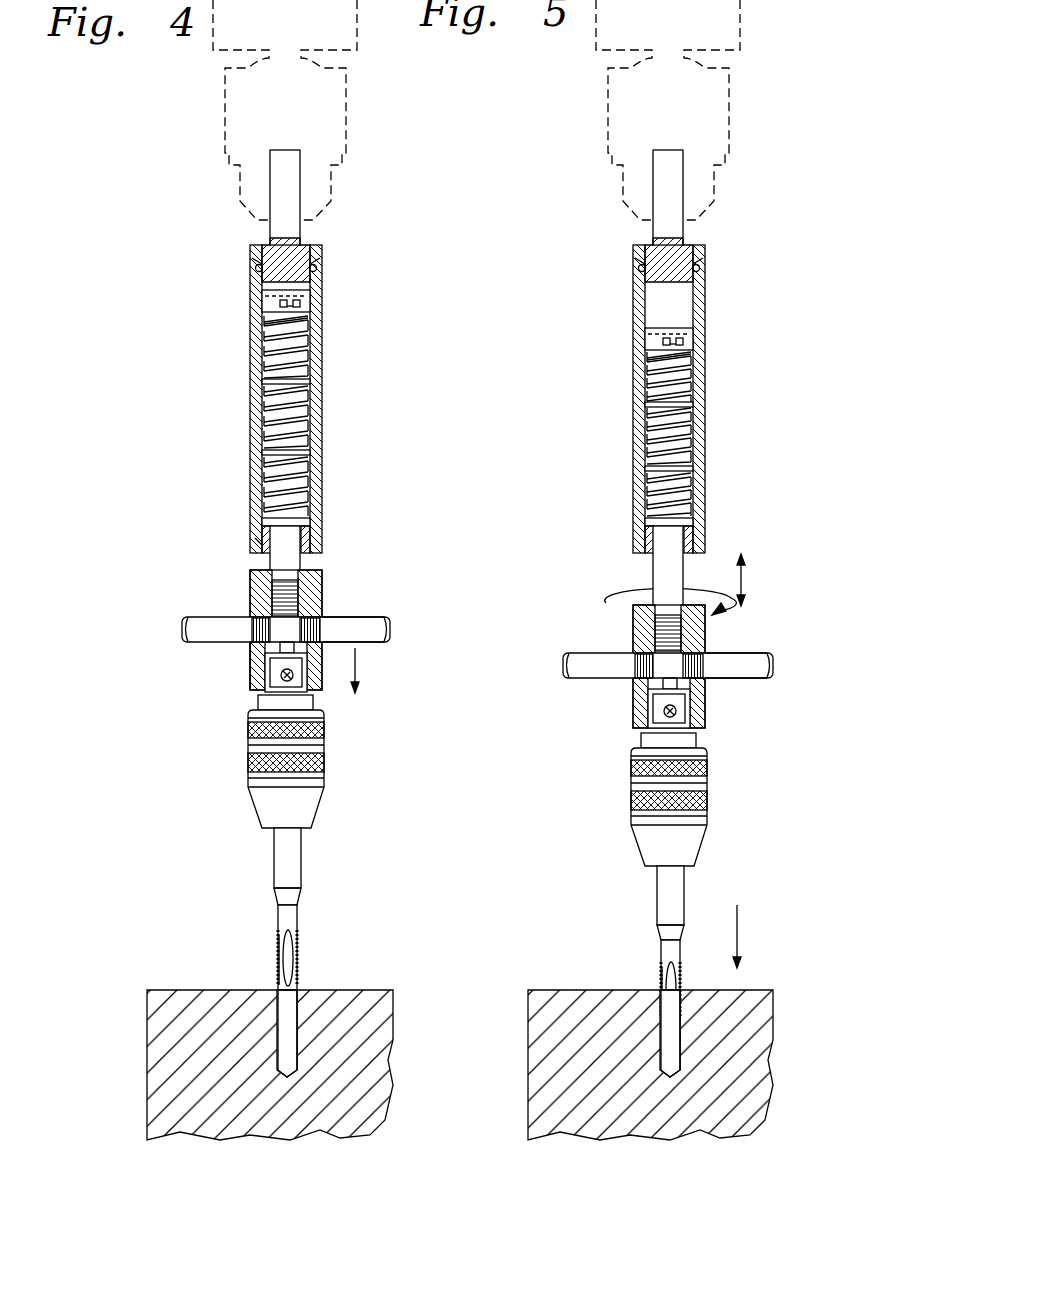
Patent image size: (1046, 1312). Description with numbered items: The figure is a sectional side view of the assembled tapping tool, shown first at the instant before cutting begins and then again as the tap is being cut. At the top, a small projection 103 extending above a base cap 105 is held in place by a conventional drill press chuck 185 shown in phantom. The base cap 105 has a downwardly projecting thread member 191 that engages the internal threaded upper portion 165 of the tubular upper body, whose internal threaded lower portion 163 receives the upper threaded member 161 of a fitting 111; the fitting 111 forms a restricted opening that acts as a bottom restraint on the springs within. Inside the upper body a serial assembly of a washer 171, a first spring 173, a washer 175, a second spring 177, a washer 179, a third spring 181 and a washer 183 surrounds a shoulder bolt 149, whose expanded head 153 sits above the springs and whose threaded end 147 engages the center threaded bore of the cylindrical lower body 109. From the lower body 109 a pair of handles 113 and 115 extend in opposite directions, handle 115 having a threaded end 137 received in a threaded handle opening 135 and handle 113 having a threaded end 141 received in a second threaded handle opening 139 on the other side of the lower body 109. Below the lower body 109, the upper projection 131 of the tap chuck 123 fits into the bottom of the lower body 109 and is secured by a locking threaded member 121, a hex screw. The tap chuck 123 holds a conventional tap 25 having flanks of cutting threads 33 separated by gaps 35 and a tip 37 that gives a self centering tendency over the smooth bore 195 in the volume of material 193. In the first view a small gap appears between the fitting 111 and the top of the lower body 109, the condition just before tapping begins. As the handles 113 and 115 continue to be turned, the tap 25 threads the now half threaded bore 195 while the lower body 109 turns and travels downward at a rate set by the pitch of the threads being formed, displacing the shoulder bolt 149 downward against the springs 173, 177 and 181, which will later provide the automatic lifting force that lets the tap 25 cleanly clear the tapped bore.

In FIG. 4, the tap 25 is at (303, 876).
In FIG. 5, the tap 25 is at (695, 915).
In FIG. 4, the cutting threads 33 is at (278, 975).
In FIG. 5, the cutting threads 33 is at (660, 983).
In FIG. 4, the gaps 35 is at (290, 945).
In FIG. 5, the gaps 35 is at (673, 965).
In FIG. 4, the tip 37 is at (300, 1012).
In FIG. 5, the tip 37 is at (690, 1012).
In FIG. 4, the small projection 103 is at (300, 190).
In FIG. 5, the small projection 103 is at (683, 190).
In FIG. 4, the base cap 105 is at (312, 248).
In FIG. 5, the base cap 105 is at (695, 248).
In FIG. 4, the lower body 109 is at (322, 582).
In FIG. 5, the lower body 109 is at (705, 690).
In FIG. 4, the fitting 111 is at (322, 548).
In FIG. 4, the handle 113 is at (212, 640).
In FIG. 5, the handle 113 is at (598, 678).
In FIG. 4, the handle 115 is at (340, 628).
In FIG. 5, the handle 115 is at (720, 663).
In FIG. 4, the locking threaded member 121 is at (280, 676).
In FIG. 5, the locking threaded member 121 is at (664, 712).
In FIG. 4, the tap chuck 123 is at (341, 700).
In FIG. 5, the tap chuck 123 is at (724, 740).
In FIG. 4, the upper projection 131 is at (322, 690).
In FIG. 5, the upper projection 131 is at (705, 728).
In FIG. 4, the threaded handle opening 135 is at (322, 645).
In FIG. 4, the threaded end 137 is at (302, 625).
In FIG. 4, the left nut 139 is at (250, 628).
In FIG. 4, the threaded end 141 is at (255, 670).
In FIG. 4, the threaded end 147 is at (270, 598).
In FIG. 5, the threaded end 147 is at (653, 652).
In FIG. 4, the shoulder bolt 149 is at (322, 662).
In FIG. 5, the shoulder bolt 149 is at (690, 570).
In FIG. 4, the expanded head 153 is at (312, 303).
In FIG. 5, the expanded head 153 is at (695, 340).
In FIG. 4, the upper threaded member 161 is at (258, 540).
In FIG. 4, the internal threaded lower portion 163 is at (262, 302).
In FIG. 5, the internal threaded lower portion 163 is at (652, 283).
In FIG. 4, the internal threaded upper portion 165 is at (262, 558).
In FIG. 4, the washer 171 is at (312, 527).
In FIG. 4, the first spring 173 is at (312, 498).
In FIG. 5, the first spring 173 is at (695, 494).
In FIG. 4, the washer 175 is at (312, 451).
In FIG. 5, the washer 175 is at (695, 467).
In FIG. 4, the second spring 177 is at (312, 411).
In FIG. 5, the second spring 177 is at (695, 434).
In FIG. 4, the washer 179 is at (312, 382).
In FIG. 5, the washer 179 is at (695, 405).
In FIG. 4, the third spring 181 is at (312, 347).
In FIG. 5, the third spring 181 is at (695, 381).
In FIG. 4, the washer 183 is at (312, 320).
In FIG. 5, the washer 183 is at (695, 353).
In FIG. 4, the drill press chuck 185 is at (340, 133).
In FIG. 5, the drill press chuck 185 is at (723, 133).
In FIG. 4, the thread member 191 is at (323, 270).
In FIG. 5, the thread member 191 is at (706, 270).
In FIG. 4, the material 193 is at (160, 990).
In FIG. 5, the material 193 is at (545, 990).
In FIG. 4, the bore 195 is at (282, 1035).
In FIG. 5, the bore 195 is at (665, 1035).